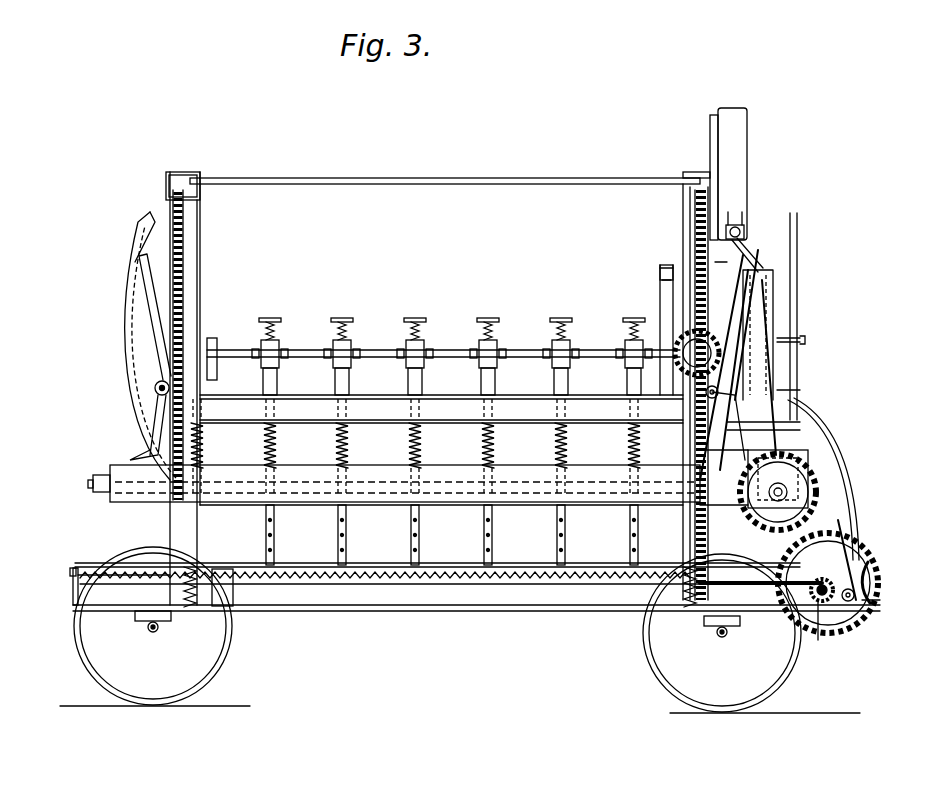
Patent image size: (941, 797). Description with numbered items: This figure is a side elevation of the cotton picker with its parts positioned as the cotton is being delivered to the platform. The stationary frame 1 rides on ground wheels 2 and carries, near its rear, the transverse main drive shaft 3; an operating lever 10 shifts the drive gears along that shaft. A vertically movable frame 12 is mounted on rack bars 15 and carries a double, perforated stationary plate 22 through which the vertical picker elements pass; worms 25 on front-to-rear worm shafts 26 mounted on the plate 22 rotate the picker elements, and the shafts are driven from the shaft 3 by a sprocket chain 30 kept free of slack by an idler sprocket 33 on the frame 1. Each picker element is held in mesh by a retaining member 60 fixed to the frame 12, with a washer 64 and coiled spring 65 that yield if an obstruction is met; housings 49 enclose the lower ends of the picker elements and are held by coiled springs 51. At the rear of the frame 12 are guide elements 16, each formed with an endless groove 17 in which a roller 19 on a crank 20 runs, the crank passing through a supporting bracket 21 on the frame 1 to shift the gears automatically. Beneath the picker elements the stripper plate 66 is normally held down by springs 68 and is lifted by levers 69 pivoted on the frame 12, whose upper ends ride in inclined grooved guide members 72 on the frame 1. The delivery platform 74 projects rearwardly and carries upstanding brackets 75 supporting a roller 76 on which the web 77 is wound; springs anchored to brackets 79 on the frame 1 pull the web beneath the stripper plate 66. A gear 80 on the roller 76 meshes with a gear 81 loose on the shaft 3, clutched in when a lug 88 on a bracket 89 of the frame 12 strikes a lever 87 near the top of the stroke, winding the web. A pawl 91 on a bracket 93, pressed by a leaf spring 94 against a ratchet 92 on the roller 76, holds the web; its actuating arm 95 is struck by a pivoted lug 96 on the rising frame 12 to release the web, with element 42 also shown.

The stationary frame 1 is at (528, 612).
The ground wheels 2 is at (650, 656).
The main drive shaft 3 is at (818, 480).
The operating lever 10 is at (152, 455).
The vertically movable frame 12 is at (285, 178).
The rack bars 15 is at (172, 213).
The guide elements 16 is at (740, 128).
The endless groove 17 is at (719, 259).
The roller 19 is at (742, 218).
The crank 20 is at (745, 232).
The supporting bracket 21 is at (776, 290).
The stationary plate 22 is at (520, 410).
The worms 25 is at (432, 346).
The worm shafts 26 is at (374, 348).
The sprocket chain 30 is at (444, 460).
The idler sprocket 33 is at (729, 401).
The arm 42 is at (760, 252).
The housings 49 is at (494, 530).
The coiled springs 51 is at (494, 449).
The retaining member 60 is at (423, 385).
The washer 64 is at (573, 340).
The coiled spring 65 is at (504, 342).
The stripper plate 66 is at (356, 562).
The springs 68 is at (195, 606).
The levers 69 is at (143, 285).
The grooved guide member 72 is at (112, 350).
The delivery platform 74 is at (845, 615).
The upstanding brackets 75 is at (818, 635).
The roller 76 is at (432, 600).
The web 77 is at (805, 580).
The brackets 79 is at (70, 582).
The gear 80 is at (838, 578).
The gear 81 is at (820, 490).
The lever 87 is at (660, 267).
The lug 88 is at (660, 272).
The bracket 89 is at (668, 268).
The pawl 91 is at (855, 561).
The ratchet 92 is at (858, 545).
The bracket 93 is at (875, 600).
The leaf spring 94 is at (872, 570).
The actuating arm 95 is at (808, 430).
The lug 96 is at (703, 333).